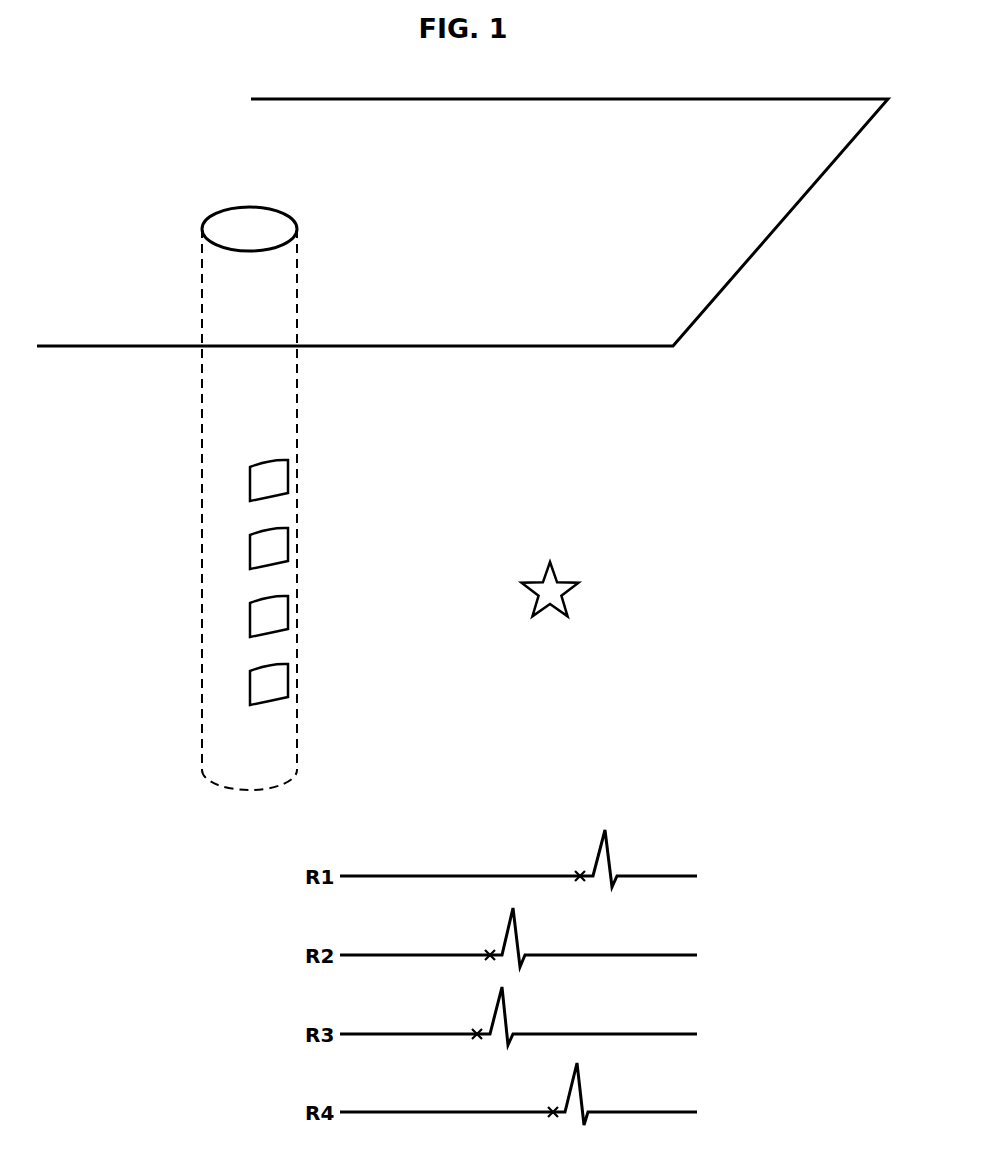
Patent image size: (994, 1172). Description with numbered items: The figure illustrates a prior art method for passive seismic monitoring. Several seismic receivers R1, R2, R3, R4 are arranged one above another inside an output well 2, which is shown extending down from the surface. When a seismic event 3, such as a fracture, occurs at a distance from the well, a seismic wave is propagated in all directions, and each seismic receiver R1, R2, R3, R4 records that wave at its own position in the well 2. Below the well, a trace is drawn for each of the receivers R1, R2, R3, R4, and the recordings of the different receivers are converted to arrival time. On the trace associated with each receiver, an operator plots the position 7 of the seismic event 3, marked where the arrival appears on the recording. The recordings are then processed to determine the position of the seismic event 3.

The output well 2 is at (299, 412).
The seismic event 3 is at (564, 586).
The position of the seismic event 7 is at (578, 872).
The seismic receiver R1 is at (265, 482).
The seismic receiver R2 is at (265, 550).
The seismic receiver R3 is at (265, 618).
The seismic receiver R4 is at (265, 686).